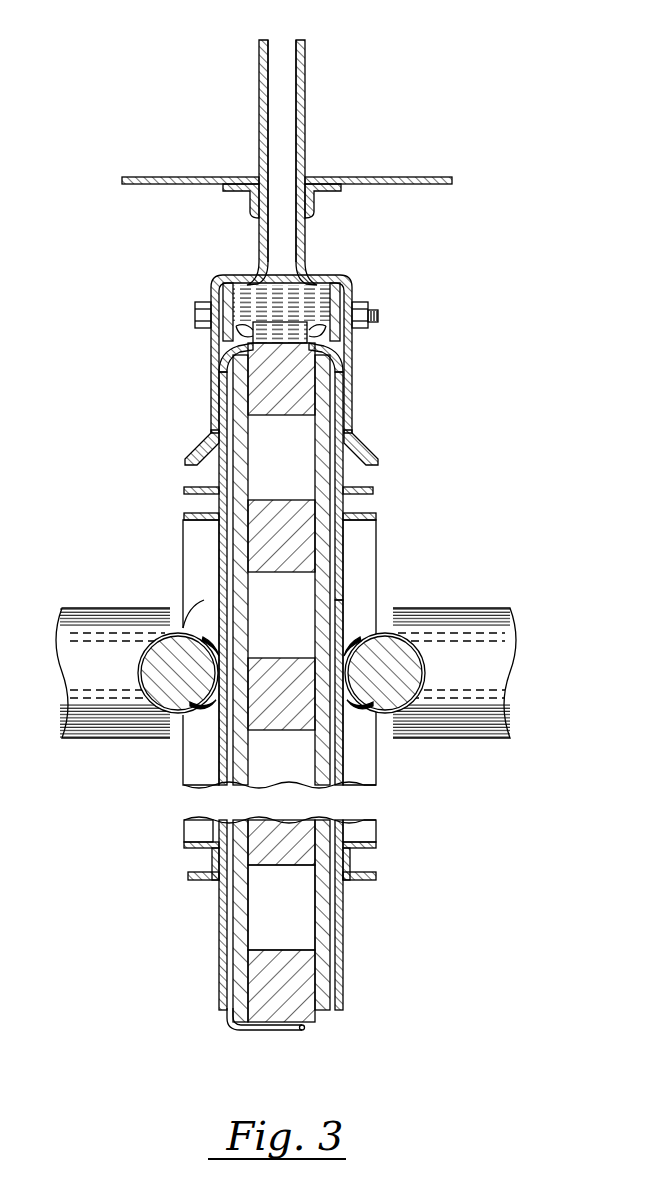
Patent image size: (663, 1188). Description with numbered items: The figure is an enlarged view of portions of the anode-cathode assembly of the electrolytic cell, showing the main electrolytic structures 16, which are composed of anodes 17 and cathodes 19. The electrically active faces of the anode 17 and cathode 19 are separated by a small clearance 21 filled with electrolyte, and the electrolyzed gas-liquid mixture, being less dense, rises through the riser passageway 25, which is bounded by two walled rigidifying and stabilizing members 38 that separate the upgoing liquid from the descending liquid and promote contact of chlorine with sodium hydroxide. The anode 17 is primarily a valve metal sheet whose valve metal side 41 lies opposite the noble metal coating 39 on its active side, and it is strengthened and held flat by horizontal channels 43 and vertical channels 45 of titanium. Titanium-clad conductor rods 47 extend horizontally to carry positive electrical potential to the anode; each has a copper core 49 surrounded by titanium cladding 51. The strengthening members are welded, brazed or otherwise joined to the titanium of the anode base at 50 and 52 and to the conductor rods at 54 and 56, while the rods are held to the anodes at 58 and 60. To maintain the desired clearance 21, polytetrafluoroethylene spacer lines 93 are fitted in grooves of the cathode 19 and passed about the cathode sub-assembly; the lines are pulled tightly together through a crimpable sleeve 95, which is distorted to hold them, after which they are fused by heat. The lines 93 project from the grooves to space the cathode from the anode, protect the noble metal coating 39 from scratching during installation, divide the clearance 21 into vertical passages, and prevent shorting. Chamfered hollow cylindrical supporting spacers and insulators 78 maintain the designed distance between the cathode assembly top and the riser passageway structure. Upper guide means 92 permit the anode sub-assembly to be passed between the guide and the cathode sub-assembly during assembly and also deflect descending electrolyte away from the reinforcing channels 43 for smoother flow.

The riser passageway 25 is at (284, 50).
The two walled rigidifying and stabilizing members 38 is at (306, 116).
The chamfered hollow cylindrical supporting spacers and insulators 78 is at (255, 298).
The crimpable sleeve 95 is at (300, 330).
The spacer lines 93 is at (341, 347).
The upper guide means 92 is at (208, 446).
The main electrolytic structures 16 is at (352, 479).
The joint of strengthening member to anode base 52 is at (348, 770).
The cathode 19 is at (240, 968).
The joint of conductor rod to anode 60 is at (323, 650).
The noble metal coating 39 is at (337, 910).
The joint of strengthening member to anode base 50 is at (219, 549).
The vertical channels 45 is at (346, 556).
The titanium-clad conductor rods 47 is at (430, 651).
The joint of strengthening member to conductor rod 54 is at (205, 646).
The joint of conductor rod to anode 58 is at (218, 672).
The copper core 49 is at (405, 678).
The titanium cladding 51 is at (383, 633).
The joint of strengthening member to conductor rod 56 is at (358, 714).
The anode 17 is at (218, 933).
The clearance 21 is at (332, 1011).
The valve metal side of the anode 41 is at (345, 930).
The horizontal channels 43 is at (368, 872).